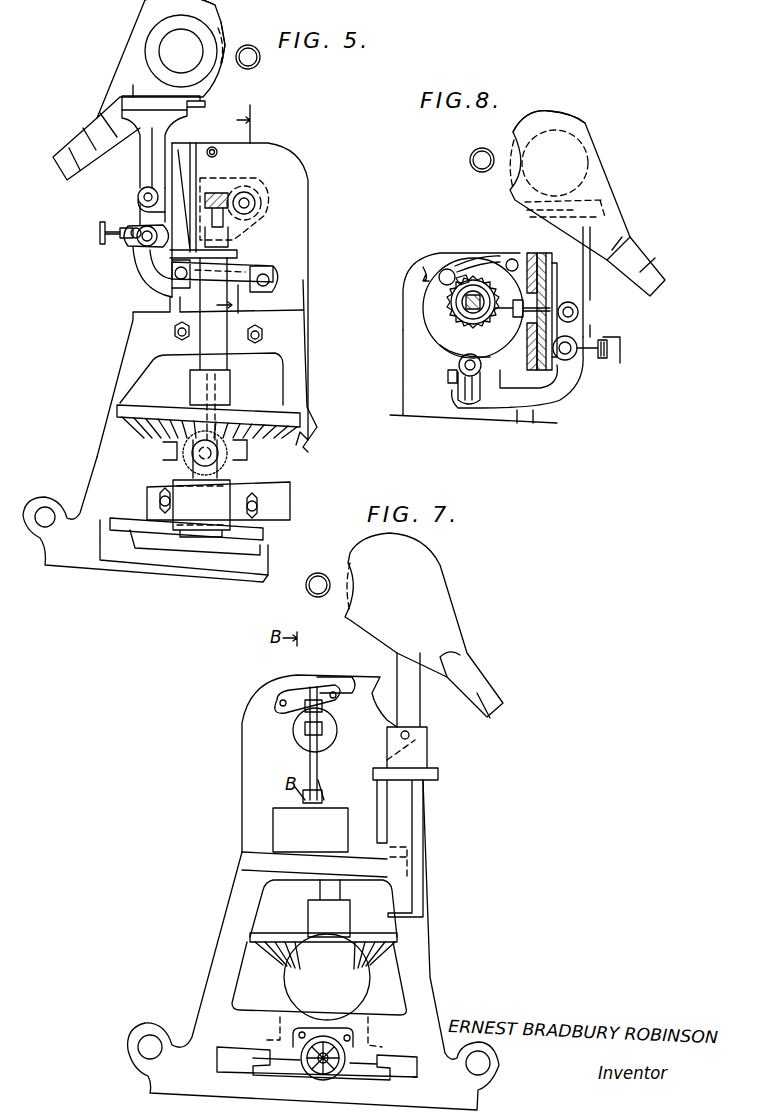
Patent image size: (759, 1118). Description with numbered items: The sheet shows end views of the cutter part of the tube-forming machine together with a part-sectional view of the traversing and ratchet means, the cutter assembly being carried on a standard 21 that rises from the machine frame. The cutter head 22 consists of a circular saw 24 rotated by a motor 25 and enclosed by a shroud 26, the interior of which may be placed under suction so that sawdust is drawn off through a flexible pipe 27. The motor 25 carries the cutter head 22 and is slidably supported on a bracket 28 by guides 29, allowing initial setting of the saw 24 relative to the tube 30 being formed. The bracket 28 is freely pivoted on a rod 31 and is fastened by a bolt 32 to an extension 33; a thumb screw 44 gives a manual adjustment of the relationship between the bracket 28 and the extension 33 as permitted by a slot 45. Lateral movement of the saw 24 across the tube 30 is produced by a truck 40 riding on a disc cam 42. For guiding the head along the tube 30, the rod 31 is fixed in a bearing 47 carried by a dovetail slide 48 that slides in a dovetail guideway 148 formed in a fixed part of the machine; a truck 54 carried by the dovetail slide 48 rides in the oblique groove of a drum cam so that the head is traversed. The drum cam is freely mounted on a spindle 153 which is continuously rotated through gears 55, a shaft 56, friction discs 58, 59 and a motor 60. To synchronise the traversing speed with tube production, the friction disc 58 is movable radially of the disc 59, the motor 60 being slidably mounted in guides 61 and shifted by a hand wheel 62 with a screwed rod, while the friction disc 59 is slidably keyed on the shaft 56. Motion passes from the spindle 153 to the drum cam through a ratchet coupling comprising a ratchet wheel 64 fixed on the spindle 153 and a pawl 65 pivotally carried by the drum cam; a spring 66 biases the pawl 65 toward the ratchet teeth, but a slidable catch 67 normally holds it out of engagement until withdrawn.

In FIG. 5, the standard / supporting arm 21 is at (140, 170).
In FIG. 8, the standard / supporting arm 21 is at (587, 302).
In FIG. 7, the standard / supporting arm 21 is at (410, 717).
In FIG. 5, the cutter head 22 is at (187, 66).
In FIG. 8, the cutter head 22 is at (511, 195).
In FIG. 7, the cutter head 22 is at (393, 580).
In FIG. 5, the circular saw 24 is at (225, 37).
In FIG. 8, the circular saw 24 is at (511, 147).
In FIG. 7, the circular saw 24 is at (347, 567).
In FIG. 5, the motor 25 is at (176, 36).
In FIG. 8, the motor 25 is at (607, 163).
In FIG. 5, the shroud 26 is at (207, 15).
In FIG. 8, the shroud 26 is at (567, 120).
In FIG. 5, the flexible pipe 27 is at (68, 152).
In FIG. 8, the flexible pipe 27 is at (636, 260).
In FIG. 5, the bracket 28 is at (207, 105).
In FIG. 8, the bracket 28 is at (607, 200).
In FIG. 5, the guides 29 is at (133, 87).
In FIG. 5, the tube 30 is at (261, 56).
In FIG. 8, the tube 30 is at (469, 161).
In FIG. 7, the tube 30 is at (306, 588).
In FIG. 5, the rod 31 is at (138, 197).
In FIG. 8, the rod 31 is at (572, 313).
In FIG. 5, the bolt 32 is at (141, 245).
In FIG. 8, the bolt 32 is at (572, 353).
In FIG. 5, the extension 33 is at (160, 272).
In FIG. 8, the extension 33 is at (547, 393).
In FIG. 8, the truck 40 is at (450, 363).
In FIG. 8, the disc cam 42 is at (448, 342).
In FIG. 5, the thumb screw 44 is at (100, 235).
In FIG. 8, the thumb screw 44 is at (604, 359).
In FIG. 5, the slot 45 is at (128, 238).
In FIG. 8, the bearing 47 is at (548, 292).
In FIG. 8, the dovetail slide 48 is at (543, 265).
In FIG. 8, the truck 54 is at (518, 313).
In FIG. 5, the gears 55 is at (251, 198).
In FIG. 5, the shaft 56 is at (213, 313).
In FIG. 7, the shaft 56 is at (330, 890).
In FIG. 5, the friction disc 58 is at (228, 453).
In FIG. 5, the friction disc 59 is at (255, 415).
In FIG. 7, the friction disc 59 is at (367, 945).
In FIG. 5, the motor 60 is at (245, 478).
In FIG. 7, the motor 60 is at (340, 982).
In FIG. 5, the guides 61 is at (264, 545).
In FIG. 7, the hand wheel 62 is at (350, 1067).
In FIG. 8, the ratchet wheel 64 is at (462, 305).
In FIG. 8, the pawl 65 is at (470, 276).
In FIG. 8, the spring 66 is at (510, 262).
In FIG. 8, the slidable catch 67 is at (452, 272).
In FIG. 8, the dovetail guideway 148 is at (530, 268).
In FIG. 8, the spindle 153 is at (468, 300).